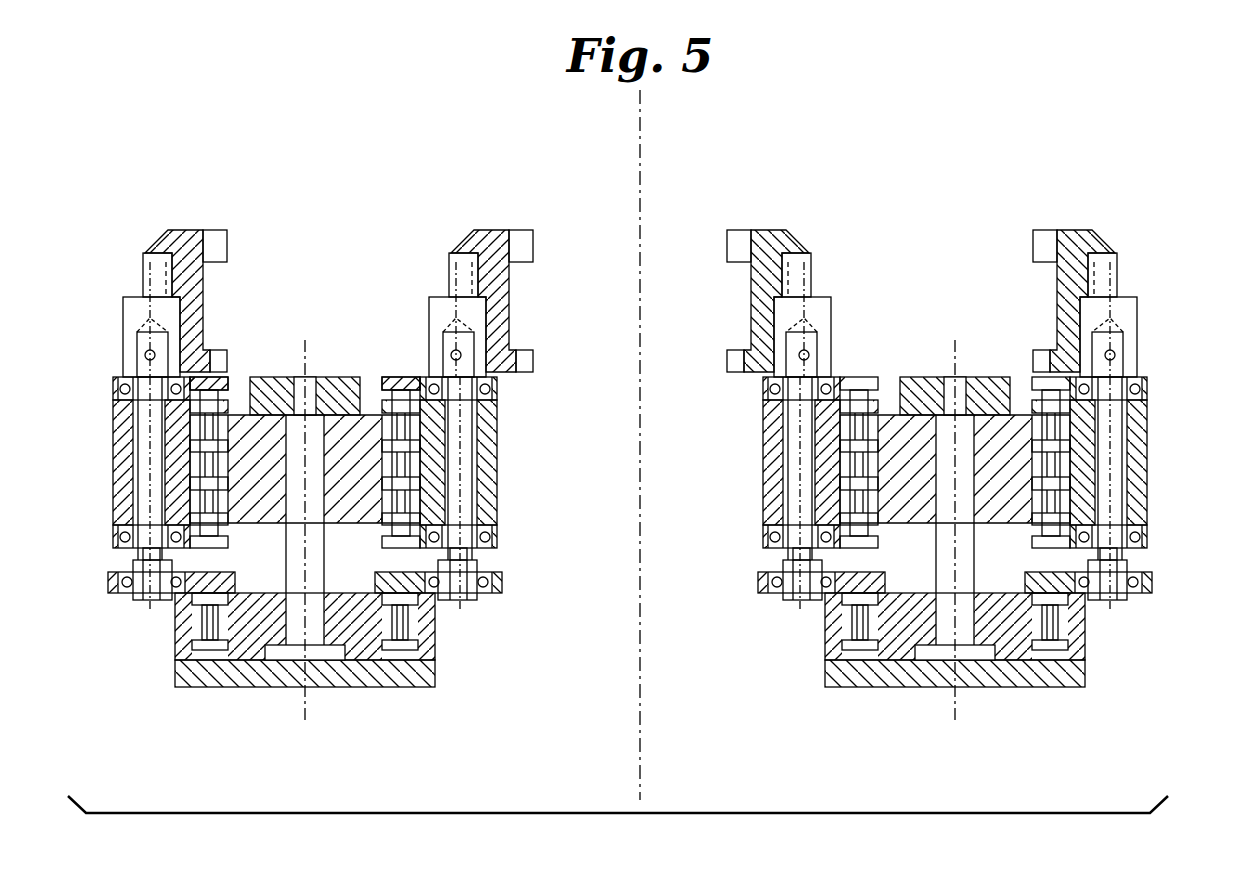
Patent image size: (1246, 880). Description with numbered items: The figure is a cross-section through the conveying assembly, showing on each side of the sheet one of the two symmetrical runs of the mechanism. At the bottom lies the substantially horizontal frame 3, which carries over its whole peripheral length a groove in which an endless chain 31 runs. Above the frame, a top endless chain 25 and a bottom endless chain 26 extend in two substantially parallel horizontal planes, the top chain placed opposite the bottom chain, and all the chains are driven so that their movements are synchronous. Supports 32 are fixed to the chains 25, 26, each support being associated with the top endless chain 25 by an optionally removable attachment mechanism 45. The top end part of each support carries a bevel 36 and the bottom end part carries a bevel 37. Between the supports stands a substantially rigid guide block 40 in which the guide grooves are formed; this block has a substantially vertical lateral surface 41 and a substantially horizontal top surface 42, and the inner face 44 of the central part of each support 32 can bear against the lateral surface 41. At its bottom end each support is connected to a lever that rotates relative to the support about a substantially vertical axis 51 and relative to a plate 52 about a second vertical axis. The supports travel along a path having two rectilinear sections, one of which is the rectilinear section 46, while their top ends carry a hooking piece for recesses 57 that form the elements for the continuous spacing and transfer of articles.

The frame 3 is at (403, 648).
The top endless chain 25 is at (213, 377).
The bottom endless chain 26 is at (200, 555).
The endless chain 31 is at (402, 617).
The support 32 is at (124, 458).
The bevel 36 is at (165, 402).
The bevel 37 is at (140, 546).
The guide block 40 is at (268, 442).
The lateral surface 41 is at (338, 420).
The top surface 42 is at (940, 377).
The inner face 44 is at (180, 462).
The attachment mechanism 45 is at (222, 378).
The rectilinear section 46 is at (215, 550).
The vertical axis 51 is at (150, 472).
The plate 52 is at (236, 620).
The recess 57 is at (205, 255).